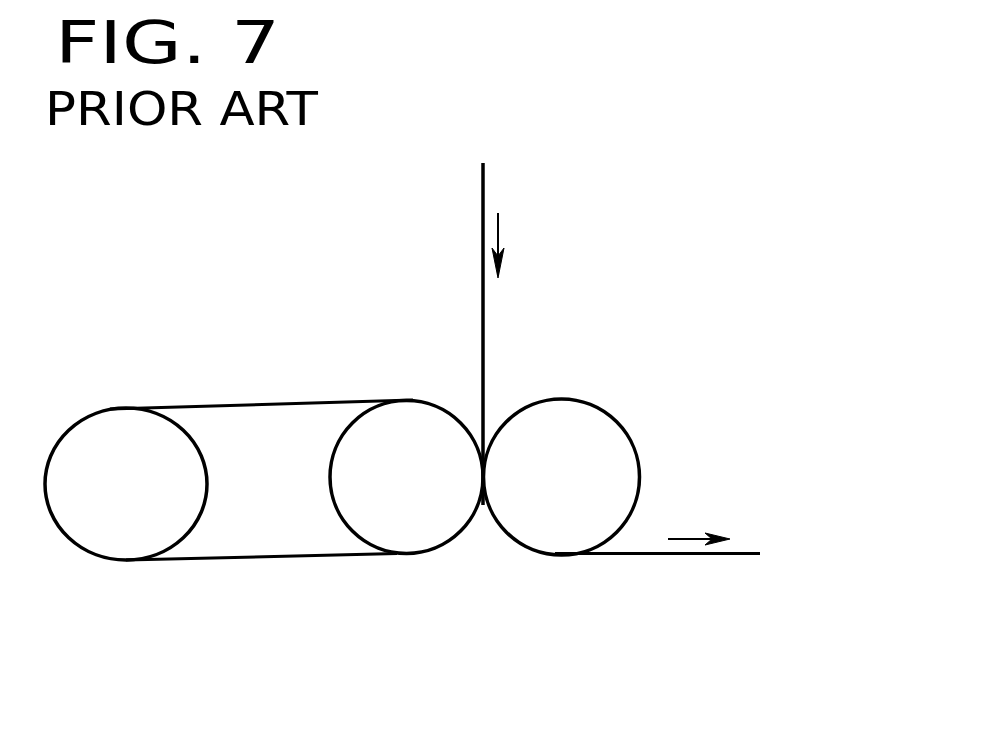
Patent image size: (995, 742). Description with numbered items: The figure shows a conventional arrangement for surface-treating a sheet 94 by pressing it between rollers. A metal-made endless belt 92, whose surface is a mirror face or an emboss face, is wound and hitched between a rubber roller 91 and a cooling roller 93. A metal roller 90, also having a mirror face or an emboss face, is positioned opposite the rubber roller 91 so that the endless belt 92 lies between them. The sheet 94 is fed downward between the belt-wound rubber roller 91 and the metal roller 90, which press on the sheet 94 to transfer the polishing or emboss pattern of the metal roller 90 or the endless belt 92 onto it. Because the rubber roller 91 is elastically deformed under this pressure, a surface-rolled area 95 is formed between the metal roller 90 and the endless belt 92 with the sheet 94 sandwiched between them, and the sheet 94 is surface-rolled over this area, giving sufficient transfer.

The metal roller 90 is at (578, 453).
The rubber roller 91 is at (410, 450).
The metal-made endless belt 92 is at (263, 555).
The cooling roller 93 is at (104, 460).
The sheet 94 is at (483, 318).
The surface-rolled area 95 is at (483, 477).